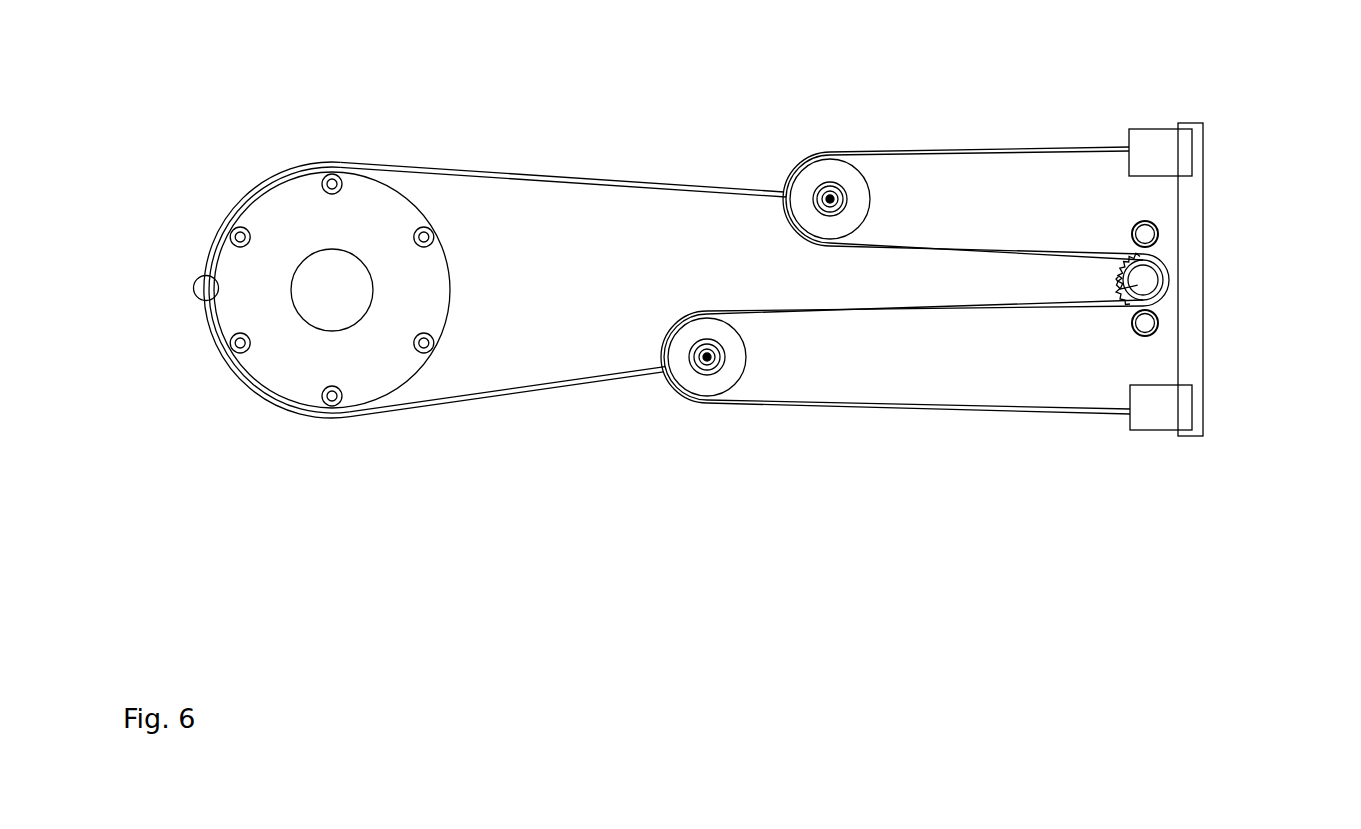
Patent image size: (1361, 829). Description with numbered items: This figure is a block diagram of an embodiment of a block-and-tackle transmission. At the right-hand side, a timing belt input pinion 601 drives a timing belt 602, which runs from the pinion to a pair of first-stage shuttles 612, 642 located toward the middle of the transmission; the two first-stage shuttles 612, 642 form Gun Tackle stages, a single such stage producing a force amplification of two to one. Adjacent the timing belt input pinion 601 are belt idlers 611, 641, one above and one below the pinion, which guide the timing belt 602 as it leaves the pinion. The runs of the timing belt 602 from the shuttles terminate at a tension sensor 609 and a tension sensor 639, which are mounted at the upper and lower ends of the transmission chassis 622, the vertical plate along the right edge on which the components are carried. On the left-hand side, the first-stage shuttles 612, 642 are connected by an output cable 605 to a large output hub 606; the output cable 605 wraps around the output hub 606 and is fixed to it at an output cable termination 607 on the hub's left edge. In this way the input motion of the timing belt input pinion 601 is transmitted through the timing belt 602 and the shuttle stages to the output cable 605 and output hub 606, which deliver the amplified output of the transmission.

The timing belt input pinion 601 is at (1137, 280).
The timing belt 602 is at (960, 150).
The output cable 605 is at (535, 178).
The output hub 606 is at (283, 201).
The output cable termination 607 is at (204, 290).
The tension sensor 609 is at (1163, 143).
The belt idler 611 is at (1152, 240).
The stage-1 shuttle 612 is at (815, 185).
The transmission chassis 622 is at (1193, 347).
The tension sensor 639 is at (1146, 430).
The belt idler 641 is at (1136, 331).
The stage-1 shuttle 642 is at (697, 375).